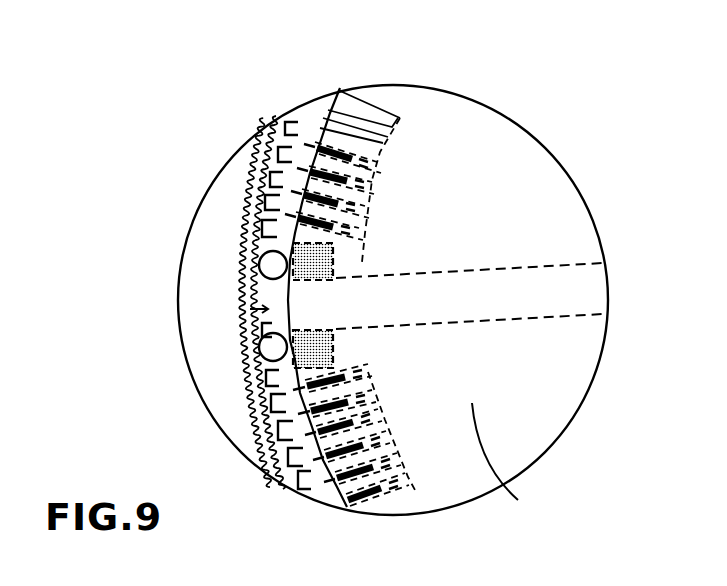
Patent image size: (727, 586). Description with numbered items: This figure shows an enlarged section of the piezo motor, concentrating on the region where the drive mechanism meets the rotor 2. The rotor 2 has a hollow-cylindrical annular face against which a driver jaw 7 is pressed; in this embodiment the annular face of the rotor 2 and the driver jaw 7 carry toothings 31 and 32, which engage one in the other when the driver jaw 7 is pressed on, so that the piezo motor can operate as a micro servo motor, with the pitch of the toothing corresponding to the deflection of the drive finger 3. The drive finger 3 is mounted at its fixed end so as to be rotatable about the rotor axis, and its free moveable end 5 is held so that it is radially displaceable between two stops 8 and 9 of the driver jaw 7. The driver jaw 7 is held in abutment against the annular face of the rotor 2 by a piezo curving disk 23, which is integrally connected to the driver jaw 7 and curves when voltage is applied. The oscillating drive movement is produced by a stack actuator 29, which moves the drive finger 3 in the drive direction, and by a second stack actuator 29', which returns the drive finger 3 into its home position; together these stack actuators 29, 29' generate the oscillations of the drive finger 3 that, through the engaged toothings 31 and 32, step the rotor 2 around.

The rotor 2 is at (204, 229).
The drive finger 3 is at (487, 303).
The free moveable end 5 is at (250, 309).
The driver jaw 7 is at (313, 502).
The stop 8 is at (258, 260).
The stop 9 is at (258, 346).
The piezo curving disk 23 is at (509, 473).
The stack actuator 29 is at (268, 453).
The second stack actuator 29' is at (233, 201).
The toothing 31 is at (242, 396).
The toothing 32 is at (280, 430).